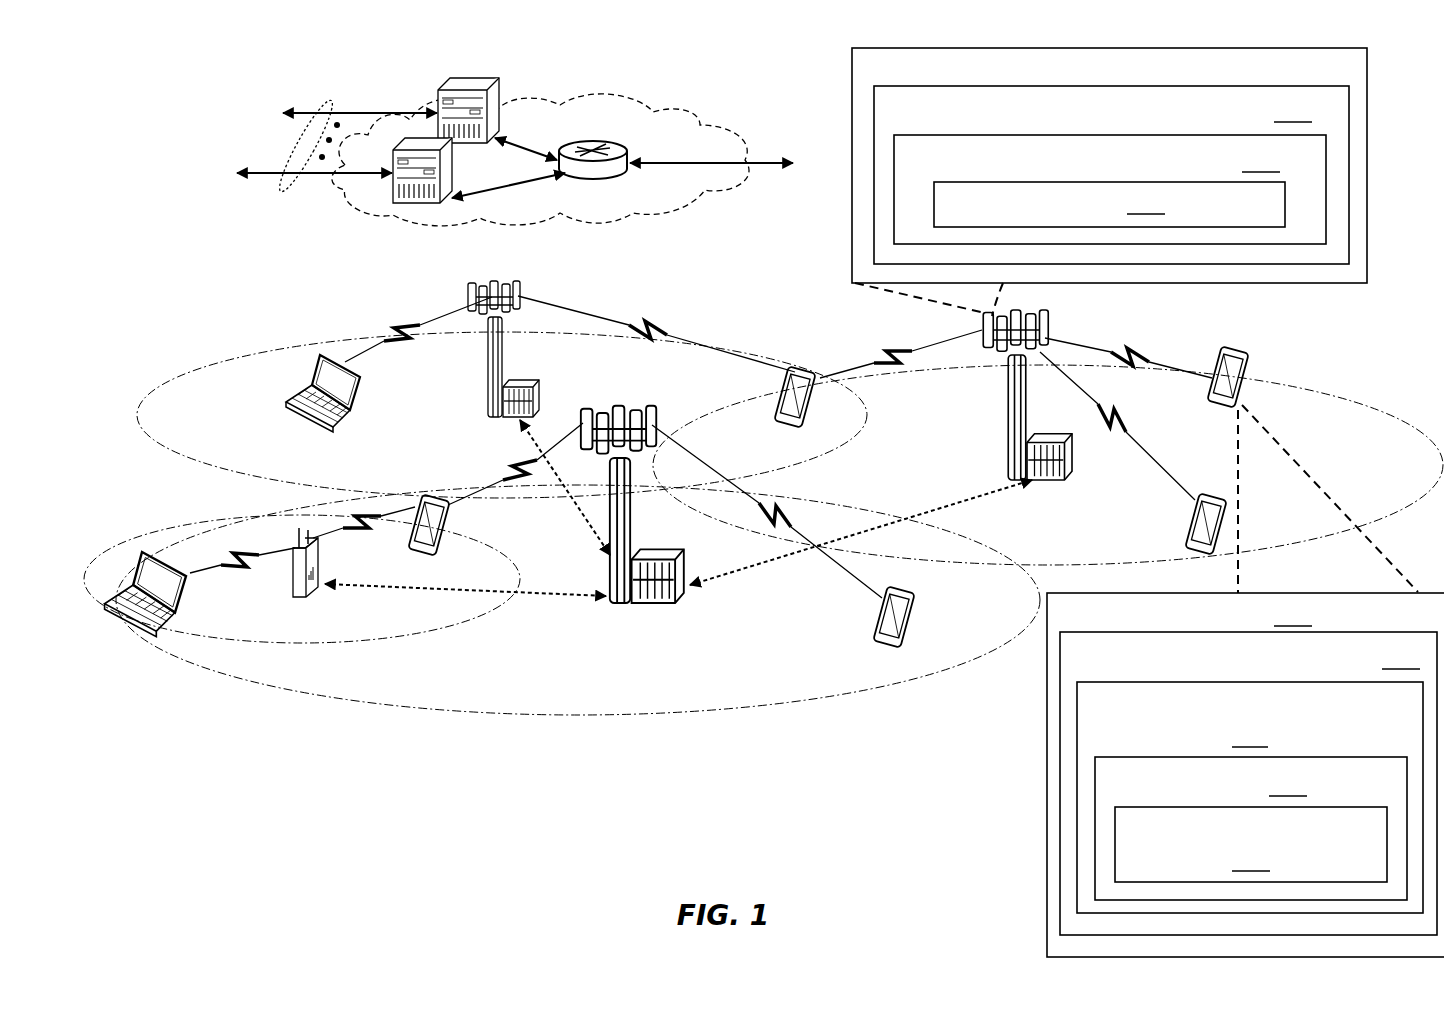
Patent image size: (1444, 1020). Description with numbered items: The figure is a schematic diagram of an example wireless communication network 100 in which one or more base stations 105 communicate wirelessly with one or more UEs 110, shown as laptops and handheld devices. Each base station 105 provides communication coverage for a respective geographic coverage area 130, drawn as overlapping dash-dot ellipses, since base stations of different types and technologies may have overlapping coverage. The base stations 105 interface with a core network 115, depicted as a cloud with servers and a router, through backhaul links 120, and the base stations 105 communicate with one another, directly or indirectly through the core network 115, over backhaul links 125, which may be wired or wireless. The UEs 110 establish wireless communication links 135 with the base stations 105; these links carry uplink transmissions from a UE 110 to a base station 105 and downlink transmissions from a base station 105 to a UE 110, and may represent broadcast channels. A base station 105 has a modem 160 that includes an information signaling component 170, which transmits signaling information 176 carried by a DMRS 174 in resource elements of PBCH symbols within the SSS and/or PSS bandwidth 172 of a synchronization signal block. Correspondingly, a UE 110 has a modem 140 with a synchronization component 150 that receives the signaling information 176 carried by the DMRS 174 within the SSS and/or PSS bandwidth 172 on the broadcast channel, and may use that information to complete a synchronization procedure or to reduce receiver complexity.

The wireless communication network 100 is at (150, 115).
The base station 105 is at (490, 386).
The UE 110 is at (340, 427).
The core network 115 is at (622, 214).
The backhaul links 120 is at (296, 181).
The backhaul links 125 is at (580, 510).
The geographic coverage area 130 is at (199, 467).
The wireless communication links 135 is at (410, 326).
The modem 140 is at (1245, 775).
The synchronization component 150 is at (1248, 783).
The modem 160 is at (1109, 165).
The information signaling component 170 is at (1111, 175).
The SSS and/or PSS bandwidth 172 is at (1158, 524).
The DMRS 174 is at (1170, 541).
The signaling information 176 is at (1251, 844).